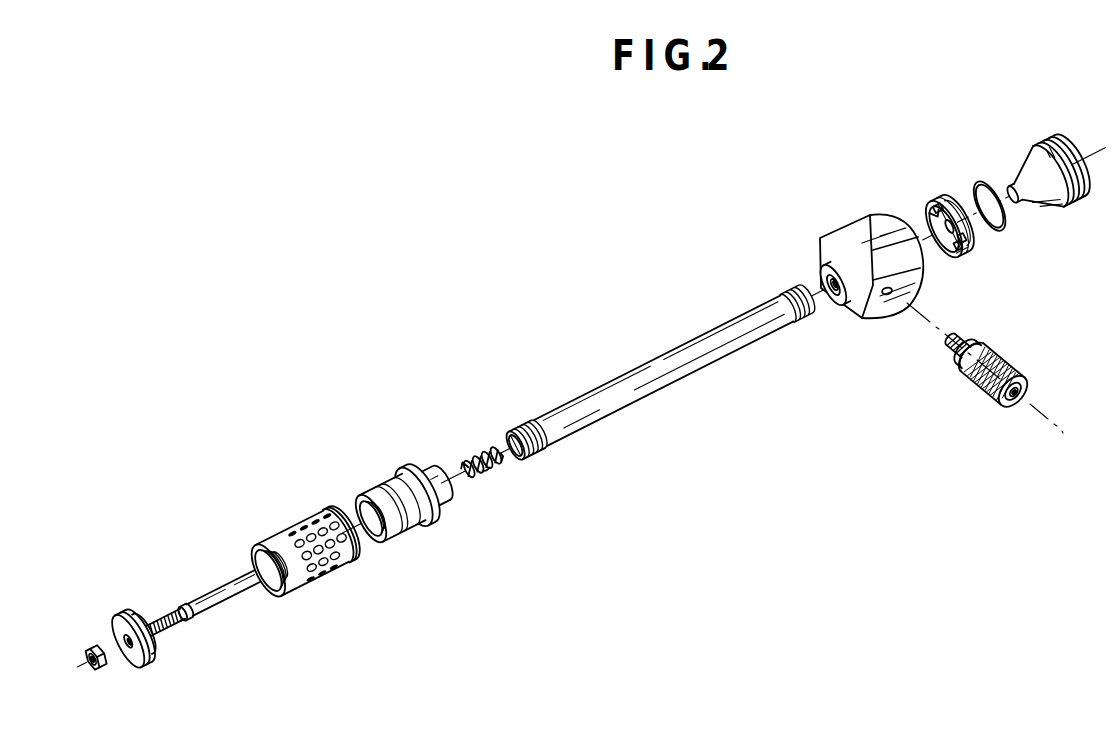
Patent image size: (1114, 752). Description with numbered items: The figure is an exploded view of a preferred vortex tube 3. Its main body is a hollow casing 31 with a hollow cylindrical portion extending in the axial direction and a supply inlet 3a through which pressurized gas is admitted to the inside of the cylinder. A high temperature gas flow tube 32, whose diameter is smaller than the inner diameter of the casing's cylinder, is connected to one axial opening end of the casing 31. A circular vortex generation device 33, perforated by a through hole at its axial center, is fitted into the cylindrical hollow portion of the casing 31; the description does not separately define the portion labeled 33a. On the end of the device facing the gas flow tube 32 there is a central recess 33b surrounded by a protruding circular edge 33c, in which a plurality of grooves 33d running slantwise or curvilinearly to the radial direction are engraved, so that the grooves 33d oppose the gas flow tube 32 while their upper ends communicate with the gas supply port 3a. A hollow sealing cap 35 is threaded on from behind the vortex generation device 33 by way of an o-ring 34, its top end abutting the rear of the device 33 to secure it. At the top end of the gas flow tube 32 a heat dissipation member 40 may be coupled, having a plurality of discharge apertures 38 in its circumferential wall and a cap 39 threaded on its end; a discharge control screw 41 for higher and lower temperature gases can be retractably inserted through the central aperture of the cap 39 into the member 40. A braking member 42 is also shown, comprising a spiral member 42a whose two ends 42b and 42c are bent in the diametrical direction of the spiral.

The vortex tube 3 is at (755, 212).
The supply inlet 3a is at (887, 297).
The hollow casing 31 is at (855, 232).
The high temperature gas flow tube 32 is at (713, 358).
The vortex generation device 33 is at (918, 230).
The retainer ring tab 33a is at (922, 228).
The recess 33b is at (952, 257).
The protruding circular edge 33c is at (937, 230).
The grooves 33d is at (928, 210).
The o-ring 34 is at (1003, 213).
The hollow sealing cap 35 is at (1040, 210).
The discharge apertures 38 is at (347, 567).
The cap 39 is at (150, 653).
The heat dissipation member 40 is at (315, 593).
The discharge control screw 41 is at (225, 602).
The braking member 42 is at (514, 466).
The spiral member 42a is at (487, 458).
The end of spiral member 42b is at (510, 448).
The end of spiral member 42c is at (458, 468).